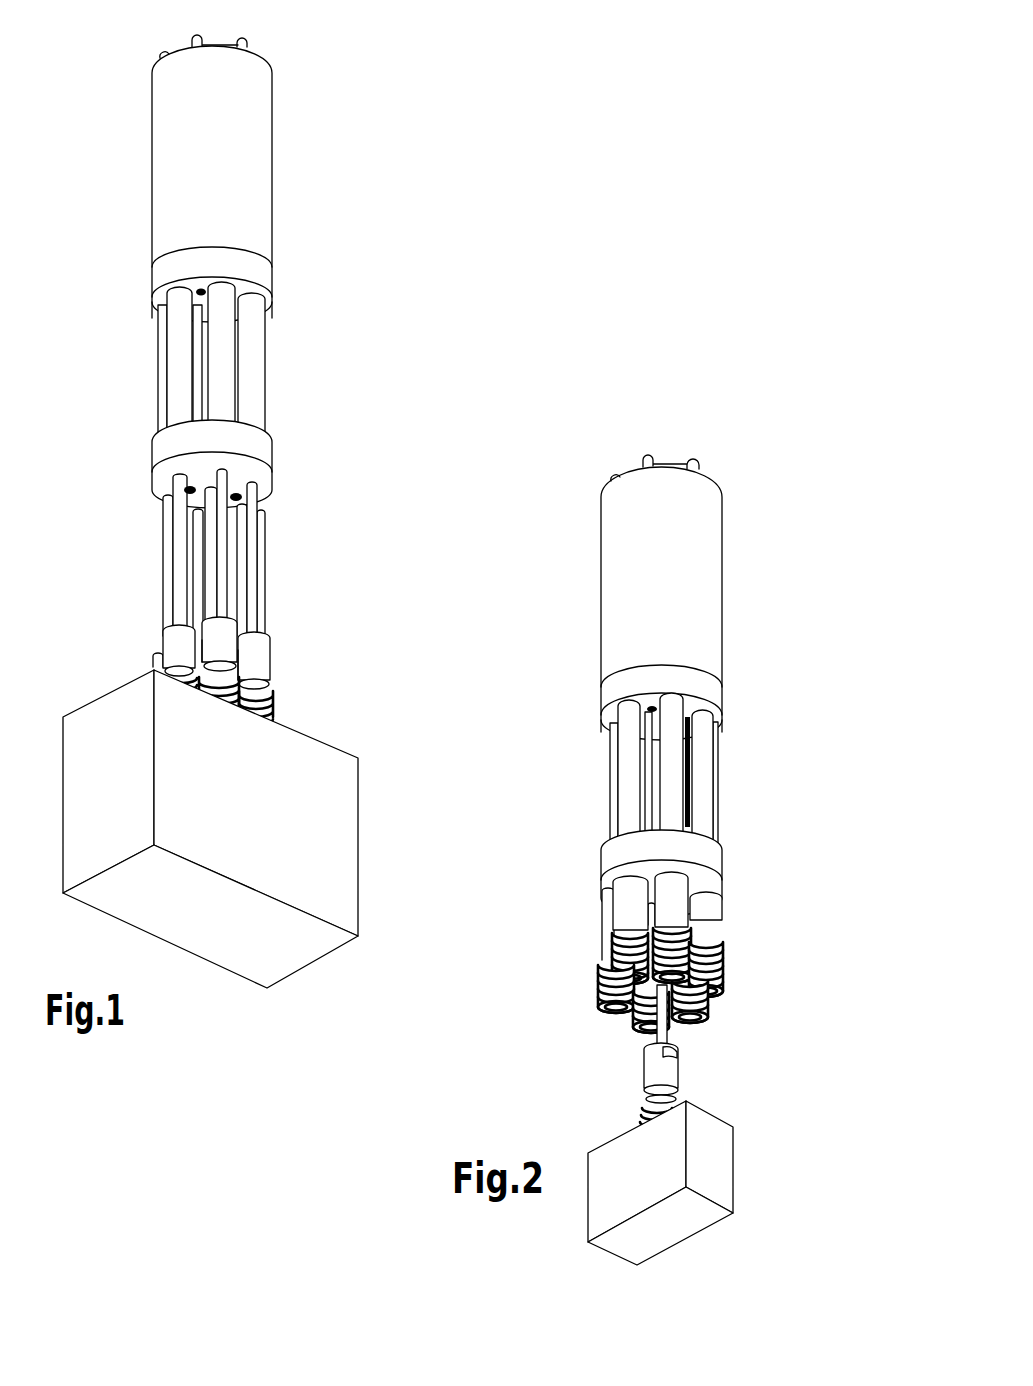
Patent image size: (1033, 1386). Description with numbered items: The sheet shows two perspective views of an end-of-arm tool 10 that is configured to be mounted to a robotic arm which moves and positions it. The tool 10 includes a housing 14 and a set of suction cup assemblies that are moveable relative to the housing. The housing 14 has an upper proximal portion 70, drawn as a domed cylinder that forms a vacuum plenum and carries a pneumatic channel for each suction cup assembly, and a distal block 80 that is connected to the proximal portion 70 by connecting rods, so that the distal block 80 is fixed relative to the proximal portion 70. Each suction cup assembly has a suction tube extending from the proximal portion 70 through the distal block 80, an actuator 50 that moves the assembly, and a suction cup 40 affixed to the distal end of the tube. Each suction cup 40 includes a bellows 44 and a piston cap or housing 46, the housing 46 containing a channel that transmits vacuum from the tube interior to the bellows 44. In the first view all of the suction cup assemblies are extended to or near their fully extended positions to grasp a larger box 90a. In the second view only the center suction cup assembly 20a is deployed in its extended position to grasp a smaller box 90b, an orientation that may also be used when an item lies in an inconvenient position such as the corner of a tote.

In FIG. 1, the end-of-arm tool 10 is at (287, 511).
In FIG. 2, the end-of-arm tool 10 is at (684, 847).
In FIG. 1, the housing 14 is at (148, 120).
In FIG. 2, the housing 14 is at (598, 537).
In FIG. 1, the proximal portion 70 is at (223, 178).
In FIG. 2, the proximal portion 70 is at (687, 589).
In FIG. 1, the distal block 80 is at (258, 448).
In FIG. 2, the distal block 80 is at (698, 848).
In FIG. 2, the actuator 50 is at (708, 768).
In FIG. 1, the piston cap or housing 46 is at (258, 650).
In FIG. 2, the piston cap or housing 46 is at (713, 918).
In FIG. 2, the bellows 44 is at (723, 968).
In FIG. 2, the suction cup 40 is at (598, 1007).
In FIG. 1, the center suction cup assembly 20a is at (339, 655).
In FIG. 2, the center suction cup assembly 20a is at (628, 1079).
In FIG. 1, the larger box 90a is at (318, 825).
In FIG. 2, the smaller box 90b is at (712, 1163).